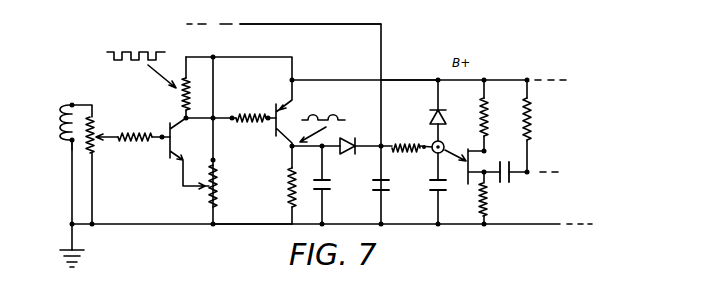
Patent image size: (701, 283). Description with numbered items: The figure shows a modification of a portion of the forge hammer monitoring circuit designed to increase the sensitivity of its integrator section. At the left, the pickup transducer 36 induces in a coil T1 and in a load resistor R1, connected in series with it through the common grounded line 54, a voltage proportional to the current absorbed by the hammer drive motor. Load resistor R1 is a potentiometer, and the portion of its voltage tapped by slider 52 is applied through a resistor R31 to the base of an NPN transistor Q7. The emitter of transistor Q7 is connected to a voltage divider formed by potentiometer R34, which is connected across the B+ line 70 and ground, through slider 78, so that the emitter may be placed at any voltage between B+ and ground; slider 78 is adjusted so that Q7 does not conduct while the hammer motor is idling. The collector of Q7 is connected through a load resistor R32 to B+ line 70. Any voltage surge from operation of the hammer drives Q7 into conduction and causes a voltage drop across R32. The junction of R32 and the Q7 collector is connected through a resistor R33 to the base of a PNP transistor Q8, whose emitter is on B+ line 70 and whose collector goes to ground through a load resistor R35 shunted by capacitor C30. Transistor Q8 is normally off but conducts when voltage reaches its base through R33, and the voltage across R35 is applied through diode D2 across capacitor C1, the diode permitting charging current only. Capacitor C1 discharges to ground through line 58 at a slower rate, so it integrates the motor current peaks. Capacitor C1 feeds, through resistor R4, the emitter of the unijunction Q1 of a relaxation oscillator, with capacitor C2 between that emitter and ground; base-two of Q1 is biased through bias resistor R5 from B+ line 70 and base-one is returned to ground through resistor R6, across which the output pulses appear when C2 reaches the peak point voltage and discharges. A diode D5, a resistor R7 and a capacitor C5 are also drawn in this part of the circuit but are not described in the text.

The coil T1 is at (70, 103).
The pickup transducer 36 is at (62, 143).
The slider 52 is at (99, 130).
The load resistor R1 is at (95, 150).
The resistor R31 is at (136, 144).
The NPN transistor Q7 is at (187, 153).
The load resistor R32 is at (183, 99).
The resistor R33 is at (251, 109).
The PNP transistor Q8 is at (286, 113).
The slider 78 is at (206, 190).
The potentiometer R34 is at (216, 187).
The load resistor R35 is at (288, 185).
The capacitor C30 is at (318, 191).
The capacitor C1 is at (380, 192).
The line 58 is at (305, 24).
The B+ line 70 is at (401, 80).
The diode D2 is at (358, 141).
The resistor R4 is at (421, 146).
The diode D5 is at (454, 100).
The unijunction Q1 is at (477, 166).
The bias resistor R5 is at (494, 116).
The resistor R7 is at (540, 119).
The capacitor C2 is at (437, 193).
The resistor R6 is at (479, 201).
The capacitor C5 is at (518, 177).
The common grounded line 54 is at (252, 228).